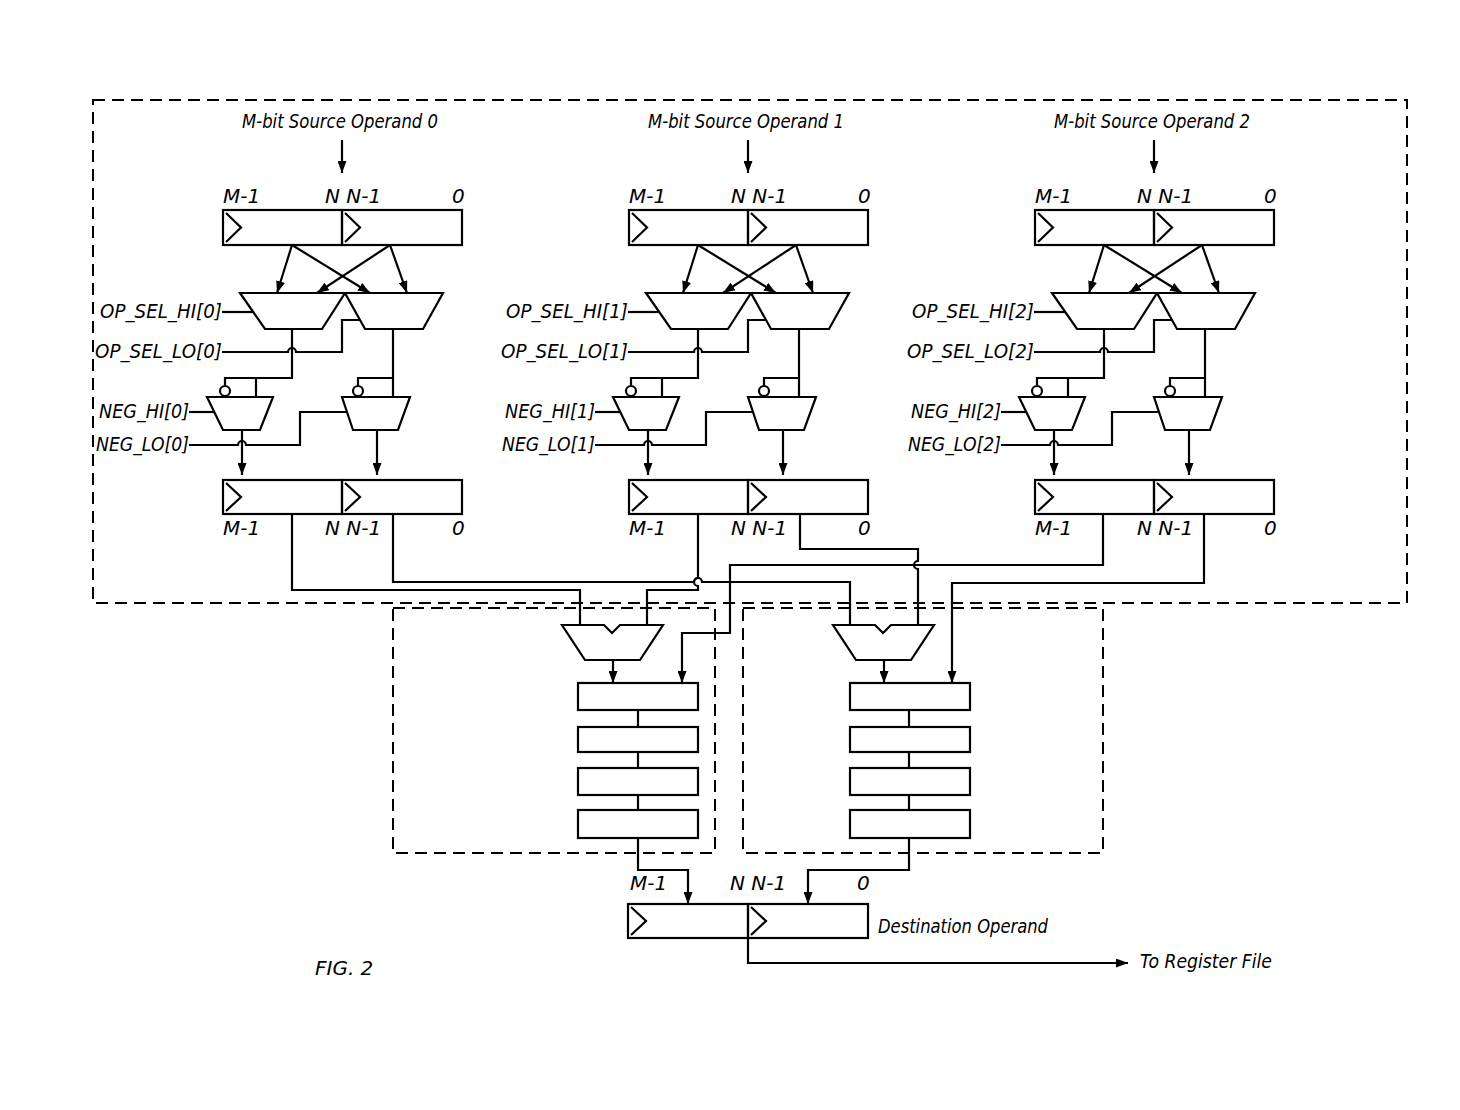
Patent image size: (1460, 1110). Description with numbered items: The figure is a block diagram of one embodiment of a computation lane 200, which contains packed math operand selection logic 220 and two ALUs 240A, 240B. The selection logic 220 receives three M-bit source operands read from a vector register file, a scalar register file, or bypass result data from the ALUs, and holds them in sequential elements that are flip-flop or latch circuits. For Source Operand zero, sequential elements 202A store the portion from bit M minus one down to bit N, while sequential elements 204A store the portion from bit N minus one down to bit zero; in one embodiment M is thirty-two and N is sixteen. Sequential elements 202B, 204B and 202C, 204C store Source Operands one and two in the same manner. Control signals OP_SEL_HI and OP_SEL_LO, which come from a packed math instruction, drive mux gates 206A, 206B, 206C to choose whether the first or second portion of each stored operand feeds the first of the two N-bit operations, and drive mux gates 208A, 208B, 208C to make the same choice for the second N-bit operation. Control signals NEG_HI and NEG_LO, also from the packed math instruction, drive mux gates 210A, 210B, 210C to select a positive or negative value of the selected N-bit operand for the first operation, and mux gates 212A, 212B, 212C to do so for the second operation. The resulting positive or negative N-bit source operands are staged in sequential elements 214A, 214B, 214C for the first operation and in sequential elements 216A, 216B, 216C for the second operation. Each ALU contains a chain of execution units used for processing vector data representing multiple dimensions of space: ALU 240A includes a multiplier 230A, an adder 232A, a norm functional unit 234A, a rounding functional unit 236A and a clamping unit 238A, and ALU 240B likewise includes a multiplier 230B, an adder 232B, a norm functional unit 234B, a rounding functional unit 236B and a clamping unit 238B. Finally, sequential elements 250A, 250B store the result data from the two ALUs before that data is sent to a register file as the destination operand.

The computation lane 200 is at (1140, 90).
The sequential elements 202A is at (223, 227).
The sequential elements 204A is at (462, 207).
The mux gate 206A is at (292, 311).
The mux gate 208A is at (394, 311).
The mux gate 210A is at (240, 413).
The mux gate 212A is at (376, 413).
The sequential elements 214A is at (223, 510).
The sequential elements 216A is at (462, 497).
The sequential elements 202B is at (629, 236).
The sequential elements 204B is at (868, 213).
The mux gate 206B is at (698, 311).
The mux gate 208B is at (800, 311).
The mux gate 210B is at (646, 413).
The mux gate 212B is at (782, 413).
The sequential elements 214B is at (628, 517).
The sequential elements 216B is at (868, 497).
The sequential elements 202C is at (1033, 236).
The sequential elements 204C is at (1276, 237).
The mux gate 206C is at (1104, 311).
The mux gate 208C is at (1206, 311).
The mux gate 210C is at (1052, 413).
The mux gate 212C is at (1188, 413).
The sequential elements 214C is at (1033, 510).
The sequential elements 216C is at (1275, 486).
The packed math operand selection logic 220 is at (1318, 554).
The multiplier 230A is at (568, 640).
The adder 232A is at (578, 692).
The norm functional unit 234A is at (578, 738).
The rounding functional unit 236A is at (578, 780).
The clamping unit 238A is at (578, 824).
The ALU 240A is at (554, 730).
The multiplier 230B is at (838, 640).
The adder 232B is at (850, 692).
The norm functional unit 234B is at (850, 738).
The rounding functional unit 236B is at (850, 780).
The clamping unit 238B is at (850, 824).
The ALU 240B is at (923, 730).
The sequential elements 250A is at (628, 915).
The sequential elements 250B is at (868, 905).